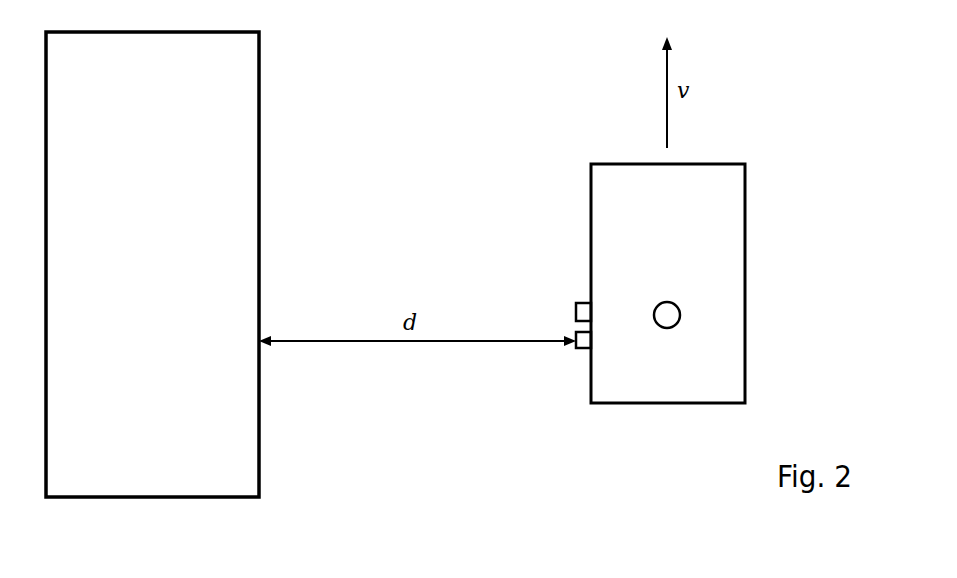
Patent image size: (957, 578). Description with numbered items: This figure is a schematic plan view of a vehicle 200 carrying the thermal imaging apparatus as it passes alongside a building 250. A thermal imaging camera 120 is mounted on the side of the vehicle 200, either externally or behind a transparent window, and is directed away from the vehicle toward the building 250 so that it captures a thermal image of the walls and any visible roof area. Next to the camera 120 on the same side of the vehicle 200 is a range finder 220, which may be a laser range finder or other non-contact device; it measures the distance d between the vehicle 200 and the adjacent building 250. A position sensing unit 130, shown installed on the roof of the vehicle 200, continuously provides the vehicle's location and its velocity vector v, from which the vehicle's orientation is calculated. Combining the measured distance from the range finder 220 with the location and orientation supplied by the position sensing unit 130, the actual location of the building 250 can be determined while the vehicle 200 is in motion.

The building 250 is at (246, 127).
The vehicle 200 is at (743, 177).
The thermal imaging camera 120 is at (577, 303).
The range finder 220 is at (577, 350).
The position sensing unit 130 is at (670, 310).